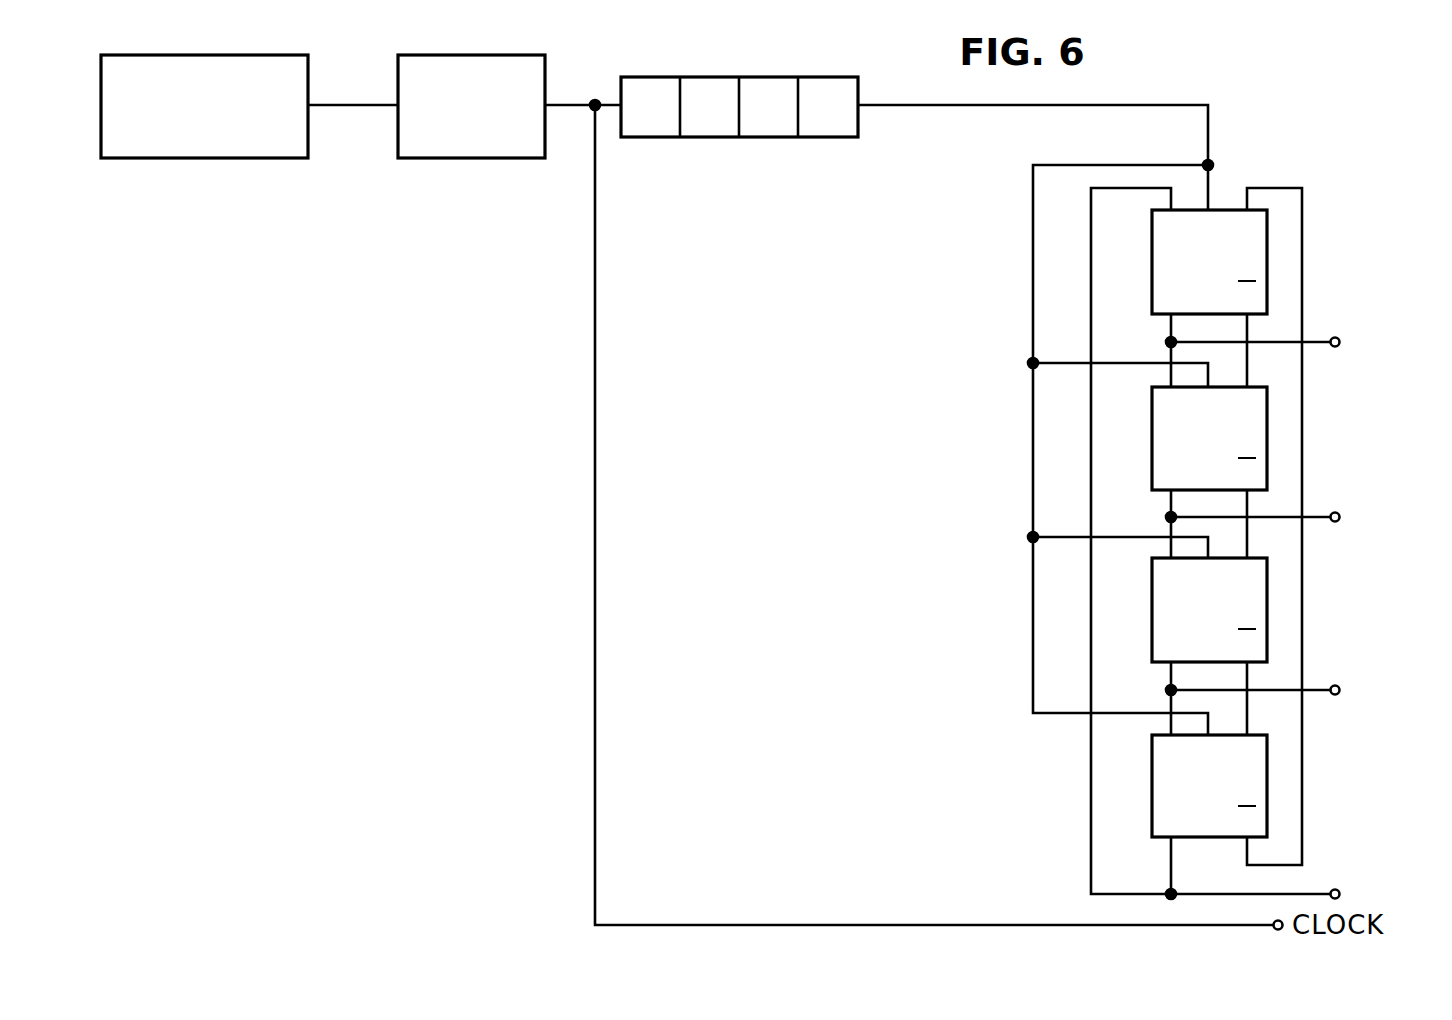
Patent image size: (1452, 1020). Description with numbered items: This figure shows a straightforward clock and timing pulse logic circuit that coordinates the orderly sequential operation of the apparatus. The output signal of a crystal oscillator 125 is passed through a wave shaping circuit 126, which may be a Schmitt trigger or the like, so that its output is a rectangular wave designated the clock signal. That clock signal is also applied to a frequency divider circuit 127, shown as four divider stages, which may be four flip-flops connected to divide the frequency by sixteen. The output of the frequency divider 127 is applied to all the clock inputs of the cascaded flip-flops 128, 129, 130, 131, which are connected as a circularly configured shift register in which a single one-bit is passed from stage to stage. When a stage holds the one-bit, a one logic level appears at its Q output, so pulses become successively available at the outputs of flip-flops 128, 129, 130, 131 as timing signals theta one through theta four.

The crystal oscillator 125 is at (261, 158).
The wave shaping circuit 126 is at (504, 158).
The frequency divider circuit 127 is at (750, 137).
The first cascaded flip-flop 128 is at (1267, 248).
The second cascaded flip-flop 129 is at (1267, 424).
The third cascaded flip-flop 130 is at (1267, 595).
The fourth cascaded flip-flop 131 is at (1267, 785).